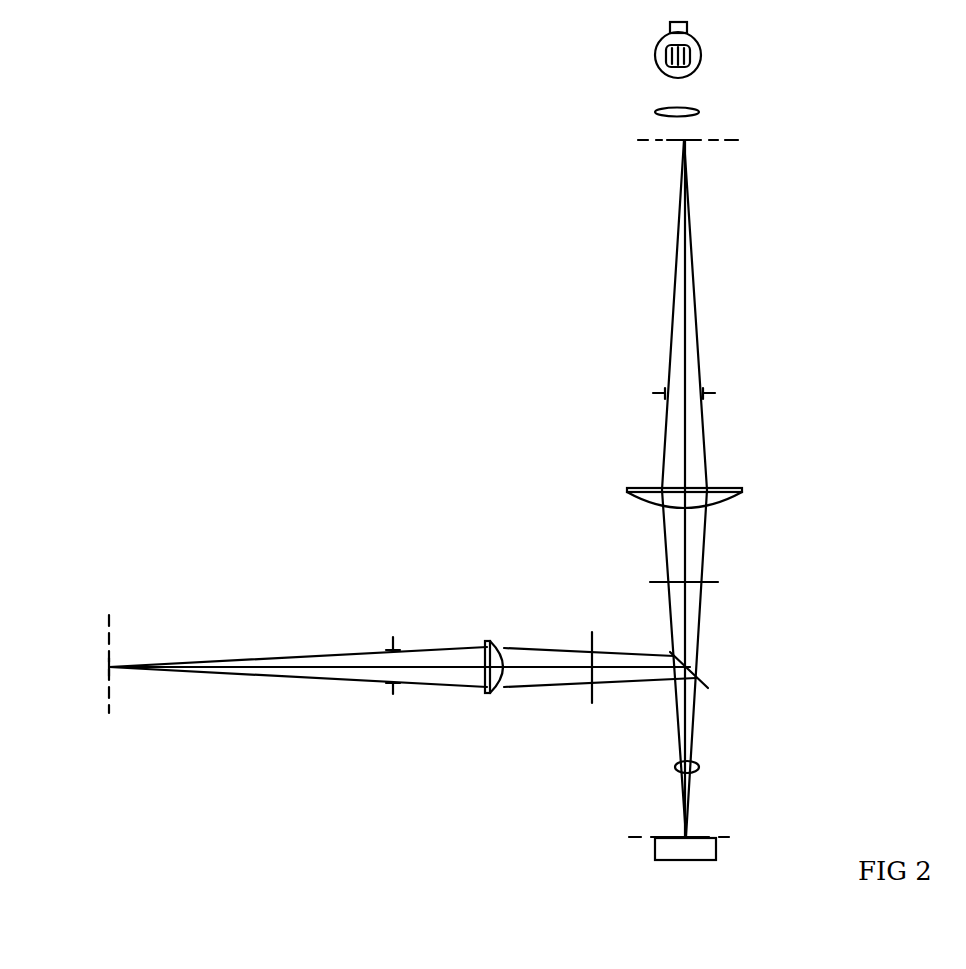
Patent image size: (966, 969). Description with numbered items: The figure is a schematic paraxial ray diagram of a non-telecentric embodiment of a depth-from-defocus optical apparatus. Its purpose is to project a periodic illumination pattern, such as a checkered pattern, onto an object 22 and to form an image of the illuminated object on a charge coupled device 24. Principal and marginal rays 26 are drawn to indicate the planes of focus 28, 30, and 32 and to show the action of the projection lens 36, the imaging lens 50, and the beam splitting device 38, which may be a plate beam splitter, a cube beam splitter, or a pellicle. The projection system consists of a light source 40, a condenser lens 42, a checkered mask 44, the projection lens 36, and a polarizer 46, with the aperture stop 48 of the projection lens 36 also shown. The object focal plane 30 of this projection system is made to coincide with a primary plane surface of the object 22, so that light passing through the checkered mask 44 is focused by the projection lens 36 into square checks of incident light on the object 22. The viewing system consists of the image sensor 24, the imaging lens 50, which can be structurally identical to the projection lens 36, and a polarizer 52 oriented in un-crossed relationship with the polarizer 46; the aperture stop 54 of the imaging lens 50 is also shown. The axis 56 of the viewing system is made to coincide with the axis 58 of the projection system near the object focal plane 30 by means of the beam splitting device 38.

The object 22 is at (718, 852).
The charge coupled device 24 is at (107, 675).
The principal and marginal rays 26 is at (700, 767).
The plane of focus 28 is at (653, 140).
The object focal plane 30 is at (650, 837).
The plane of focus 32 is at (112, 630).
The projection lens 36 is at (650, 488).
The beam splitting device 38 is at (668, 648).
The light source 40 is at (700, 48).
The condenser lens 42 is at (688, 107).
The checkered mask 44 is at (690, 142).
The polarizer 46 is at (712, 582).
The aperture stop 48 is at (660, 396).
The imaging lens 50 is at (485, 645).
The polarizer 52 is at (590, 640).
The aperture stop 54 is at (393, 686).
The axis of the viewing system 56 is at (195, 672).
The axis of the projection system 58 is at (685, 217).